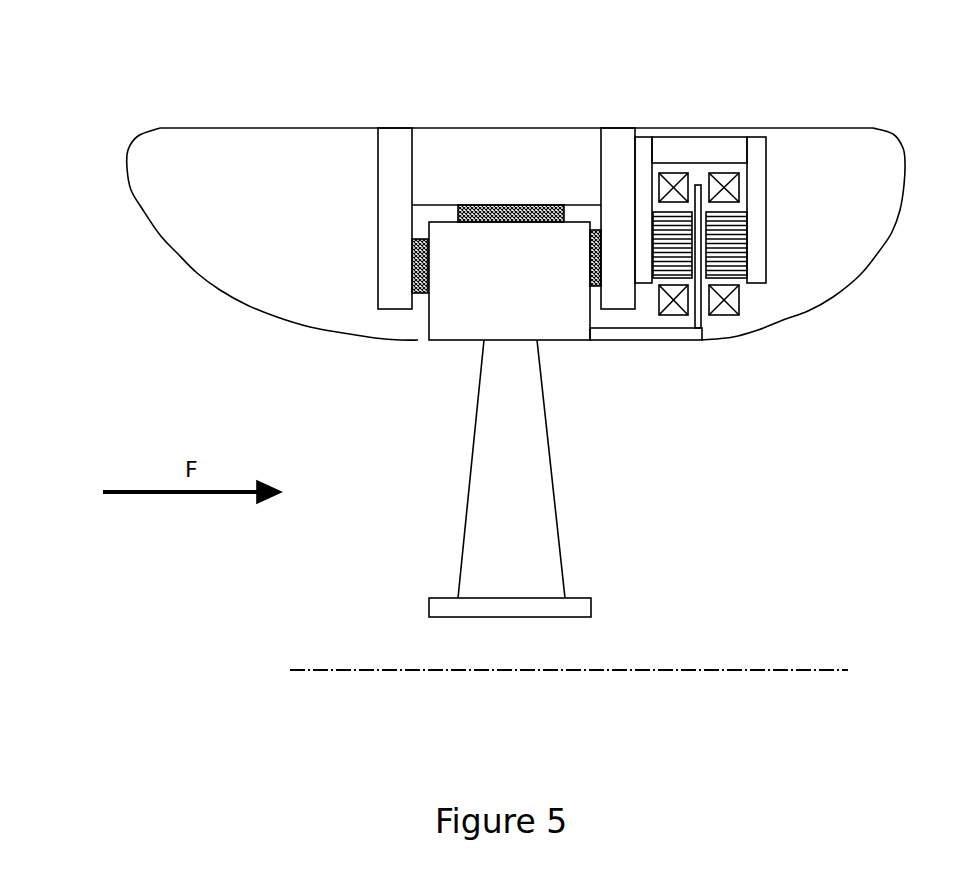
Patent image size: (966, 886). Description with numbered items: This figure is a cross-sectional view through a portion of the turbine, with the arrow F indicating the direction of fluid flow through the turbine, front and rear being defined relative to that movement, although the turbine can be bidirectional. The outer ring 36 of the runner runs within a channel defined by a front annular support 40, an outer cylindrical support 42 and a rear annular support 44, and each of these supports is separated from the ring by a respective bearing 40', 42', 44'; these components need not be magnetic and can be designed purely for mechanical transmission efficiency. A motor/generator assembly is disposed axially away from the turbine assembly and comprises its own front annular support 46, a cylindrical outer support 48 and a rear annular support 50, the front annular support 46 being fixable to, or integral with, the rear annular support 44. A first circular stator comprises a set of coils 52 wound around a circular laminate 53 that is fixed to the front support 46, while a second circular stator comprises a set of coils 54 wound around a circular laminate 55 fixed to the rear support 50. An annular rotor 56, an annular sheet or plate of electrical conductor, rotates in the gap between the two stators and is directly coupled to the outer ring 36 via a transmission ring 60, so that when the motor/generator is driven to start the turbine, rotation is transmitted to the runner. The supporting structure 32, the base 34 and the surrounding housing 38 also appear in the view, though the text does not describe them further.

The tower 32 is at (480, 541).
The foundation 34 is at (423, 607).
The outer ring 36 is at (467, 328).
The nacelle housing 38 is at (243, 265).
The front annular support 40 is at (332, 183).
The bearing 40' is at (434, 173).
The outer cylindrical support 42 is at (506, 116).
The bearing 42' is at (511, 127).
The rear annular support 44 is at (621, 181).
The bearing 44' is at (582, 178).
The front annular support 46 is at (643, 153).
The cylindrical outer support 48 is at (705, 153).
The rear annular support 50 is at (755, 153).
The coils 52 is at (682, 315).
The circular laminate 53 is at (657, 267).
The coils 54 is at (742, 303).
The circular laminate 55 is at (728, 228).
The annular rotor 56 is at (698, 315).
The transmission ring 60 is at (618, 328).